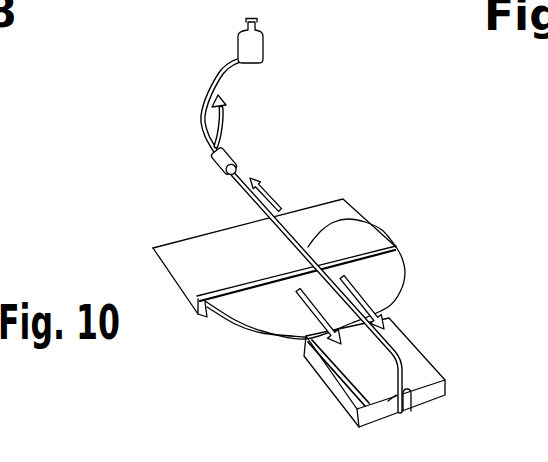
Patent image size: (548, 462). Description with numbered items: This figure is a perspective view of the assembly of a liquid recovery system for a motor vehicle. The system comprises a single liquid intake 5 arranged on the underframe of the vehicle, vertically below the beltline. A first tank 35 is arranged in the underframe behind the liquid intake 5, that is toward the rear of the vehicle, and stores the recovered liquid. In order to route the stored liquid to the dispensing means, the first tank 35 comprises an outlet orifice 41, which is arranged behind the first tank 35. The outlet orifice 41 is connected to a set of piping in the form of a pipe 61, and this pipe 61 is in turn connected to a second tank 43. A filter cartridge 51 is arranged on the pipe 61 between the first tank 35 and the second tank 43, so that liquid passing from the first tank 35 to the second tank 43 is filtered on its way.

The liquid intake 5 is at (246, 331).
The first tank 35 is at (417, 371).
The outlet orifice 41 is at (407, 404).
The second tank 43 is at (244, 42).
The filter cartridge 51 is at (213, 167).
The pipe 61 is at (374, 226).